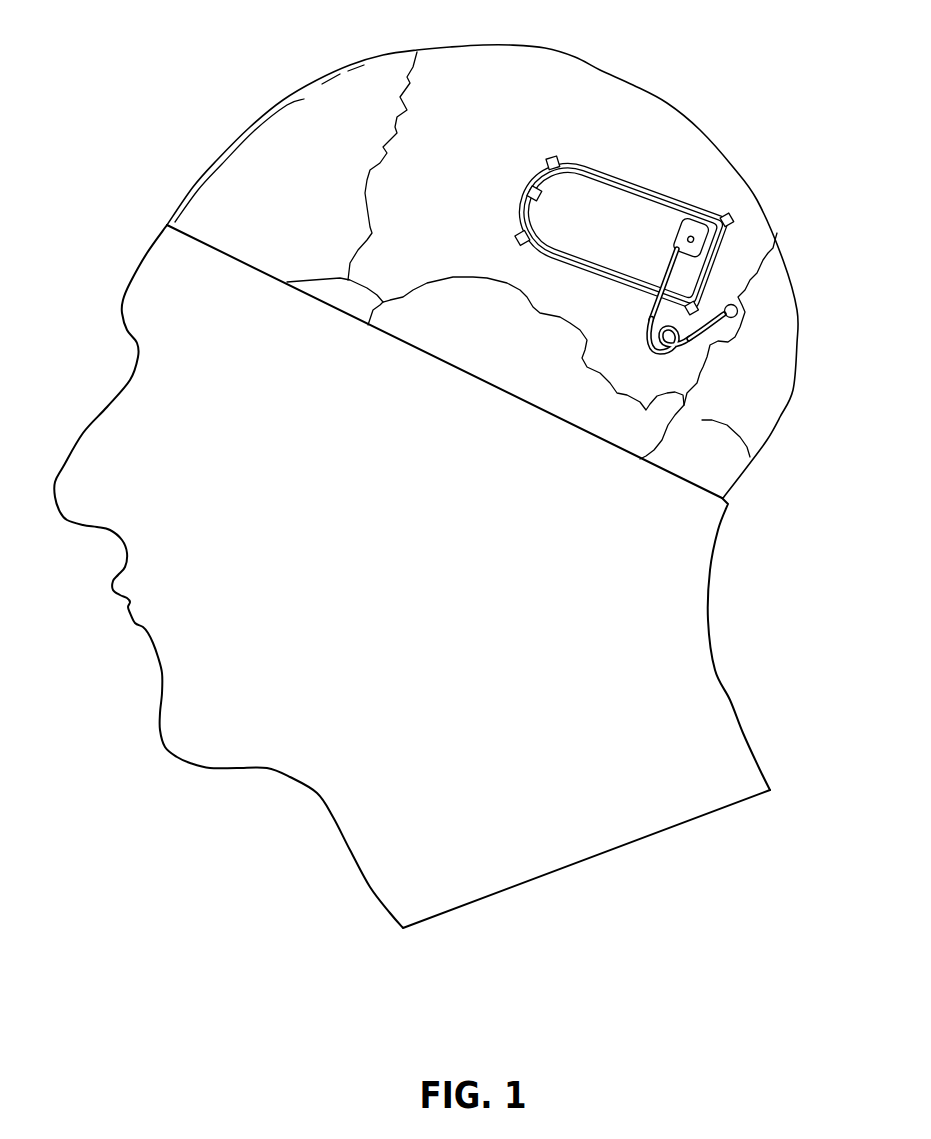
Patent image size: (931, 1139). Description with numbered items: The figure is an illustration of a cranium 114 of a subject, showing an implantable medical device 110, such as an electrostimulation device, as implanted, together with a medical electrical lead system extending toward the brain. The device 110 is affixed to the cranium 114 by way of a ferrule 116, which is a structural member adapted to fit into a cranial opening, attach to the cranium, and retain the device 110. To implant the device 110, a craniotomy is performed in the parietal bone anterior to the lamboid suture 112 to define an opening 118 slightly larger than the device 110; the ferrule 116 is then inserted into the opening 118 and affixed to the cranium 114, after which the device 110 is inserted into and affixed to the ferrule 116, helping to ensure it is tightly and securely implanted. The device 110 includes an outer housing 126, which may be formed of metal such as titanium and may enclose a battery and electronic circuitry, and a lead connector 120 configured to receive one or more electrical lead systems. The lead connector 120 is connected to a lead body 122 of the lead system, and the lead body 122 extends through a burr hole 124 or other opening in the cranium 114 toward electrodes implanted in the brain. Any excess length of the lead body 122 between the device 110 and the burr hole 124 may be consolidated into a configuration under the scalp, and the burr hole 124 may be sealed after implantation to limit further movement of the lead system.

The implantable medical device 110 is at (604, 180).
The lamboid suture 112 is at (698, 373).
The cranium 114 is at (493, 50).
The ferrule 116 is at (580, 161).
The opening 118 is at (523, 193).
The lead connector 120 is at (687, 227).
The lead body 122 is at (648, 348).
The burr hole 124 is at (737, 313).
The outer housing 126 is at (627, 283).